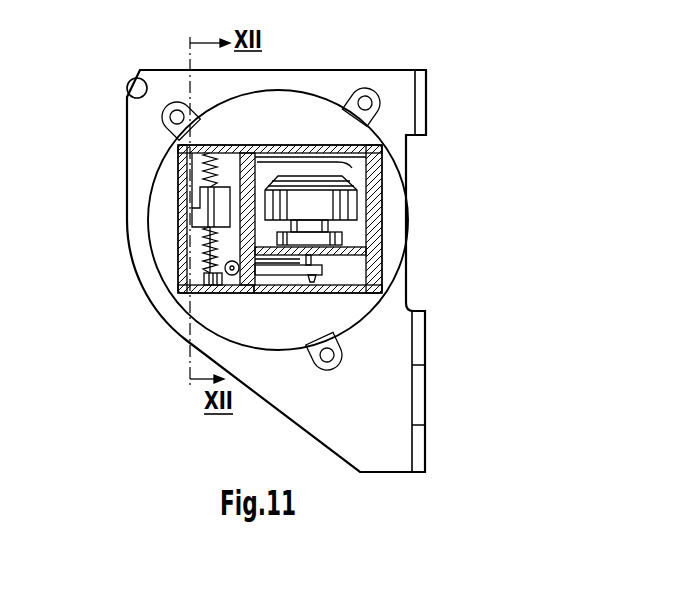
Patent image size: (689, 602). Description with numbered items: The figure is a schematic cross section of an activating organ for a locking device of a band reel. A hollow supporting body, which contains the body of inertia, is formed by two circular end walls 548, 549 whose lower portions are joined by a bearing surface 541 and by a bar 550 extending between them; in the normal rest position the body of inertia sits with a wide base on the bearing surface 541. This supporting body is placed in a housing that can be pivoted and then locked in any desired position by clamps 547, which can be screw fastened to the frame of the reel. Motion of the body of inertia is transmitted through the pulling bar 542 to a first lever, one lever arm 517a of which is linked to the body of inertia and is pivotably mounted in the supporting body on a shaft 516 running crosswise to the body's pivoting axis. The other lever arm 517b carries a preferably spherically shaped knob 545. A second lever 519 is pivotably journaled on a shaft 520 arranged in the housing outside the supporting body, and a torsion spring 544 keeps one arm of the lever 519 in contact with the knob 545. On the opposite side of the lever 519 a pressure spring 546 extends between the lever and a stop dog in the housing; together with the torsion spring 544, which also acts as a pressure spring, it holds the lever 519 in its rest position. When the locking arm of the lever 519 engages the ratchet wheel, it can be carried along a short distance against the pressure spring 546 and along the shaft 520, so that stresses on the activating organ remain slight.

The shaft 516 is at (222, 282).
The lever arm 517a is at (287, 273).
The lever arm 517b is at (183, 289).
The lever 519 is at (193, 219).
The shaft 520 is at (227, 147).
The bearing surface 541 is at (355, 252).
The pulling bar 542 is at (327, 267).
The torsion spring 544 is at (200, 176).
The knob 545 is at (210, 262).
The pressure spring 546 is at (210, 245).
The clamps 547 is at (377, 115).
The circular end wall 548 is at (253, 173).
The circular end wall 549 is at (374, 190).
The bar 550 is at (378, 152).